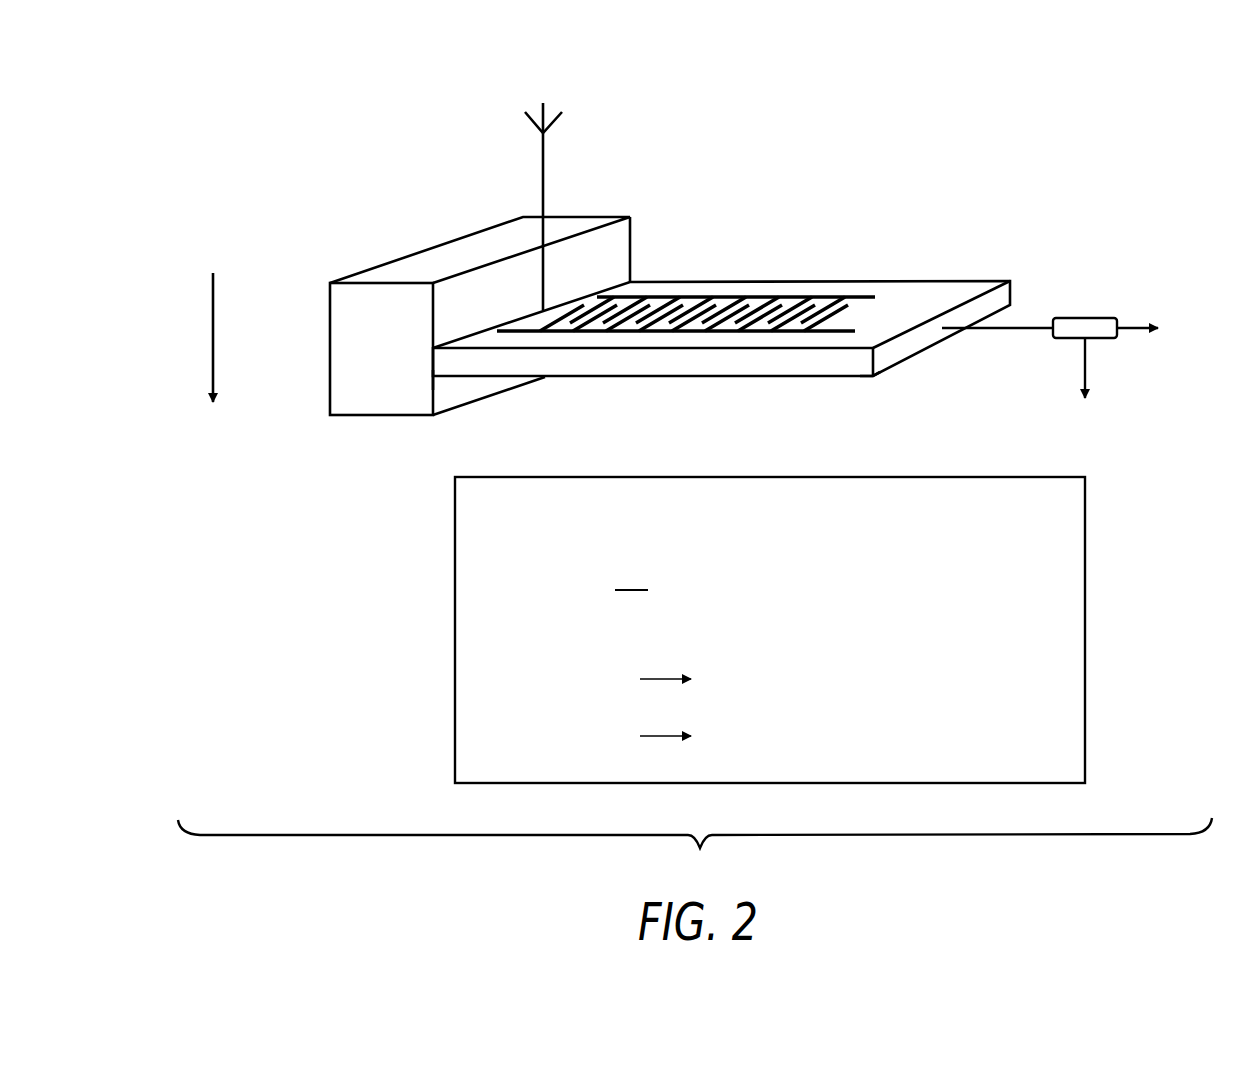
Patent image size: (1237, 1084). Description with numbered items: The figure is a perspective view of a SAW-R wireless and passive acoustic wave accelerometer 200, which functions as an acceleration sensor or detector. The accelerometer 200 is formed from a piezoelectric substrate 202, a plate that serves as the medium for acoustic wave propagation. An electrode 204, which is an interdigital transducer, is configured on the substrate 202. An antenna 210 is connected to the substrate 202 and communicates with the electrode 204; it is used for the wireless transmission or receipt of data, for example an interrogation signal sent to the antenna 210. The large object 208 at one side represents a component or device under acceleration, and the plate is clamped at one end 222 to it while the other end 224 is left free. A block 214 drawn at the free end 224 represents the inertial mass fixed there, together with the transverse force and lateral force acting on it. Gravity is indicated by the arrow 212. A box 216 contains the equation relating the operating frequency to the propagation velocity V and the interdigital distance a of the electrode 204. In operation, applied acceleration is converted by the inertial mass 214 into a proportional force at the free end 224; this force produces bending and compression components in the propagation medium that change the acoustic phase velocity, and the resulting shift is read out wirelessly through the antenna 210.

The SAW-R wireless and passive acoustic wave accelerometer 200 is at (773, 264).
The piezoelectric substrate 202 is at (997, 300).
The electrode 204 is at (773, 297).
The object 208 is at (618, 250).
The antenna 210 is at (543, 185).
The arrow 212 is at (213, 343).
The block 214 is at (1120, 350).
The block 216 is at (1020, 570).
The clamped end 222 is at (433, 378).
The free end 224 is at (877, 394).